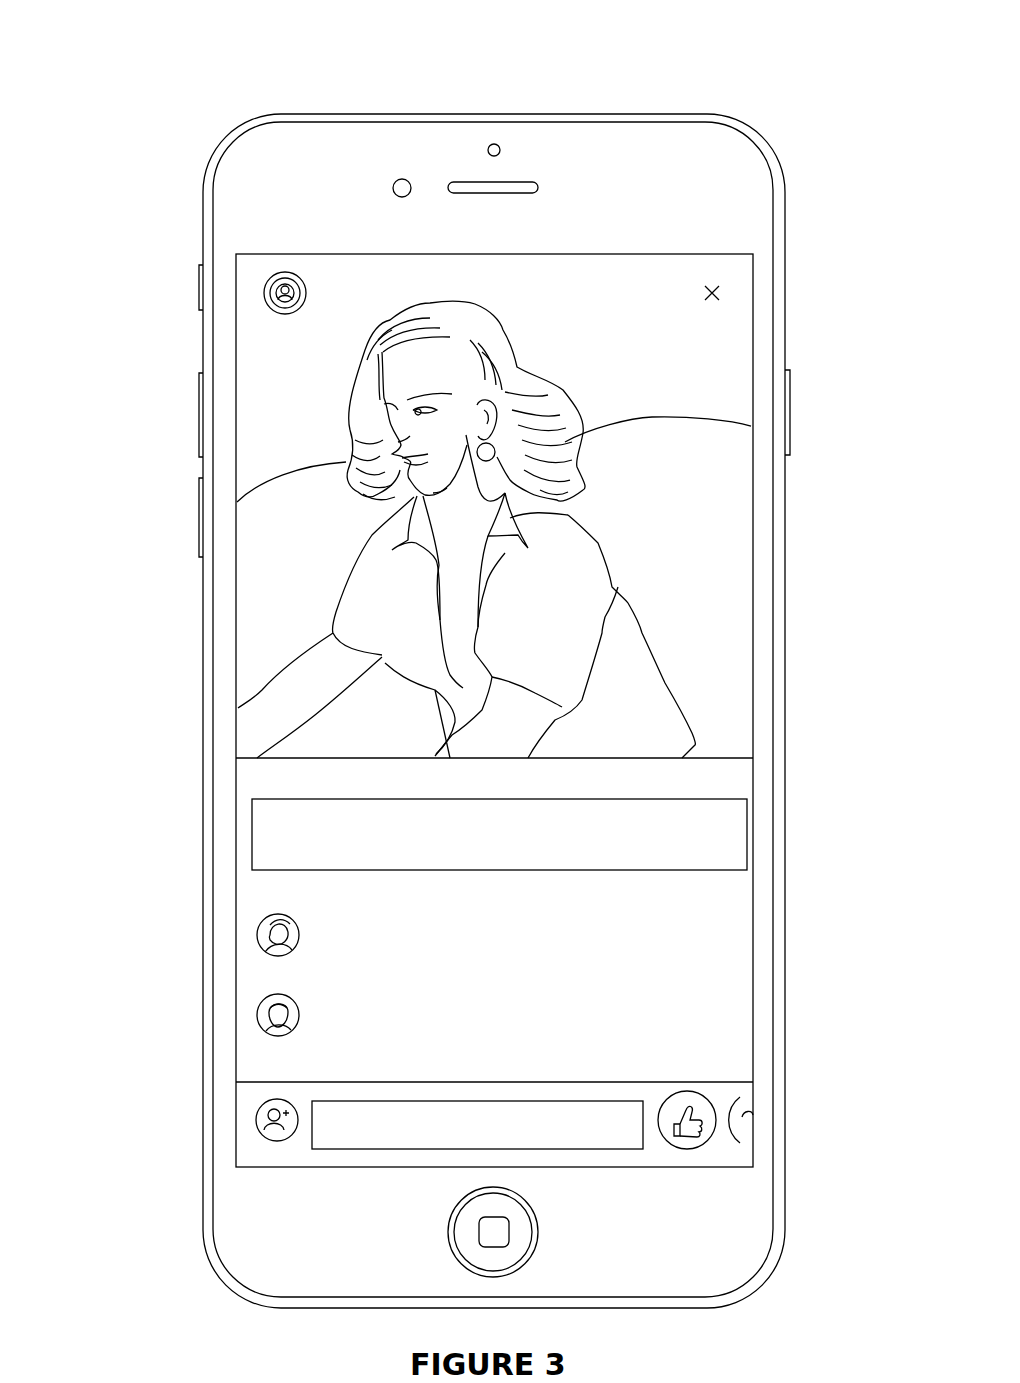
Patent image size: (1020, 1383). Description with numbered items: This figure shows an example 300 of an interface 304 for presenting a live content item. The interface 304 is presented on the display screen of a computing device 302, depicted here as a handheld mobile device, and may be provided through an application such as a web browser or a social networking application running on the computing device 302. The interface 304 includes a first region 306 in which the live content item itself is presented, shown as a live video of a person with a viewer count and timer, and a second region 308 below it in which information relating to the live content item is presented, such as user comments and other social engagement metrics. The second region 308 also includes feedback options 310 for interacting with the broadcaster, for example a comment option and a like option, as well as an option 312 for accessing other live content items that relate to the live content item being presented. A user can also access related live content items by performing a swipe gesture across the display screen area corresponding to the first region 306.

The example 300 is at (100, 40).
The computing device 302 is at (770, 140).
The interface 304 is at (237, 328).
The first region 306 is at (263, 378).
The second region 308 is at (742, 775).
The feedback options 310 is at (757, 1097).
The option for accessing other live content items 312 is at (262, 810).